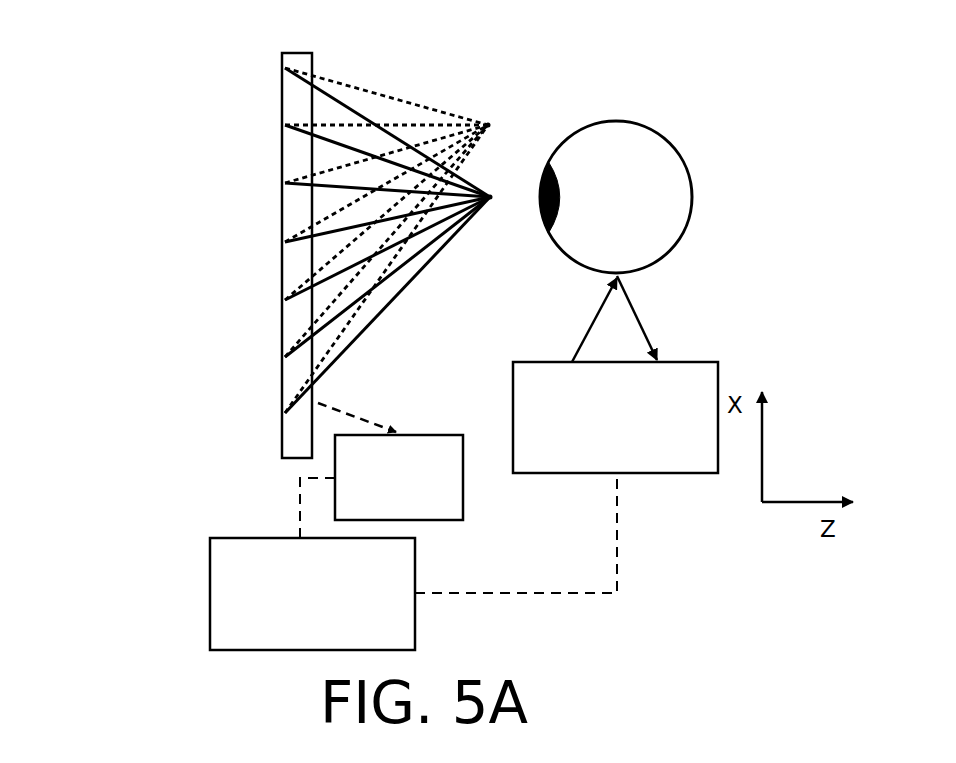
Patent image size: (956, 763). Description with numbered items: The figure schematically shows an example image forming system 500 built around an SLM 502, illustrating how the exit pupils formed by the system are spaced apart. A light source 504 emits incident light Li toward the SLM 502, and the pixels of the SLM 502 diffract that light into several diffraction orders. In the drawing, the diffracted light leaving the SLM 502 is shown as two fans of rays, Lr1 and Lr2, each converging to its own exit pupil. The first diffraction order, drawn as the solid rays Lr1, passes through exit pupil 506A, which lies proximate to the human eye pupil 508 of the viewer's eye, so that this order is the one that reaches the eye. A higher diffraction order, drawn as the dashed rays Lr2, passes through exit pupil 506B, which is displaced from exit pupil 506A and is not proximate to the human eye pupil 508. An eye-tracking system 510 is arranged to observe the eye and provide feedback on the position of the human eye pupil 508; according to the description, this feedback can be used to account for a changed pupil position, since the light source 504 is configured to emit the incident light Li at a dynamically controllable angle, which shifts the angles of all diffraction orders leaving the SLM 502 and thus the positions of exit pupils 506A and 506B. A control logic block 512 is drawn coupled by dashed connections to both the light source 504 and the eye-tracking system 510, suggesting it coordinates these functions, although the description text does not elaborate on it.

The image forming system 500 is at (118, 260).
The SLM 502 is at (282, 88).
The light source 504 is at (399, 477).
The exit pupil 506A is at (497, 197).
The exit pupil 506B is at (493, 124).
The human eye pupil 508 is at (542, 212).
The eye-tracking system 510 is at (615, 374).
The control logic 512 is at (413, 561).
The first set of reflected light rays Lr1 is at (425, 291).
The second set of reflected light rays Lr2 is at (417, 91).
The incident light Li is at (373, 409).